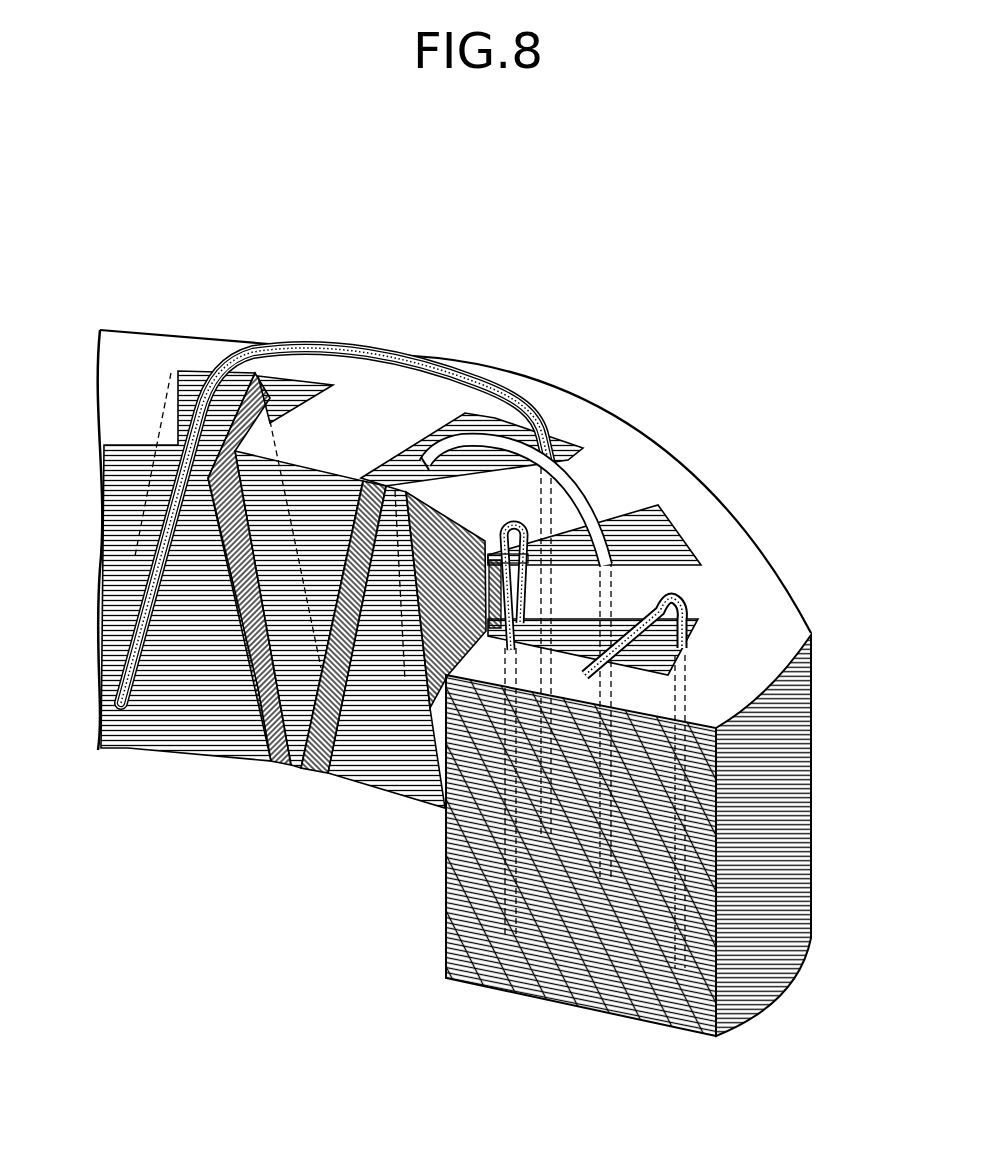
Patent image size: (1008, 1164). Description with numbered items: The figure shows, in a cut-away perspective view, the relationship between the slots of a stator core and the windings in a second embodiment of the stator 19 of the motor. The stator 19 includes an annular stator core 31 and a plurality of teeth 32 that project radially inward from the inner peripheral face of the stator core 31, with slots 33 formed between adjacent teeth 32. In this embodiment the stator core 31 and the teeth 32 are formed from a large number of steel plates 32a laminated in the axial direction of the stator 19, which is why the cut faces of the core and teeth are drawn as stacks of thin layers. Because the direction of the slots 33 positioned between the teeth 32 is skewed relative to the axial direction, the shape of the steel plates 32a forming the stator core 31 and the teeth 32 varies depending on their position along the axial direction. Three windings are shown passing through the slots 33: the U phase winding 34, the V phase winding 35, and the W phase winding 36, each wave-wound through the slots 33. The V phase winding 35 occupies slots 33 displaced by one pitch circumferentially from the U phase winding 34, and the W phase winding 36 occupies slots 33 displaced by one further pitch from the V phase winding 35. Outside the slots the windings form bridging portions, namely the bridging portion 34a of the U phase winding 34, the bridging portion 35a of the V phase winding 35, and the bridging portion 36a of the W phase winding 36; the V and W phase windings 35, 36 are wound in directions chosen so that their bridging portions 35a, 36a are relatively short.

The stator 19 is at (600, 341).
The stator core 31 is at (727, 480).
The teeth 32 is at (226, 760).
The steel plates 32a is at (438, 970).
The slots 33 is at (185, 372).
The U phase winding 34 is at (378, 334).
The bridging portion of U phase winding 34a is at (440, 357).
The V phase winding 35 is at (580, 486).
The bridging portion of V phase winding 35a is at (458, 425).
The W phase winding 36 is at (484, 512).
The bridging portion of W phase winding 36a is at (545, 549).